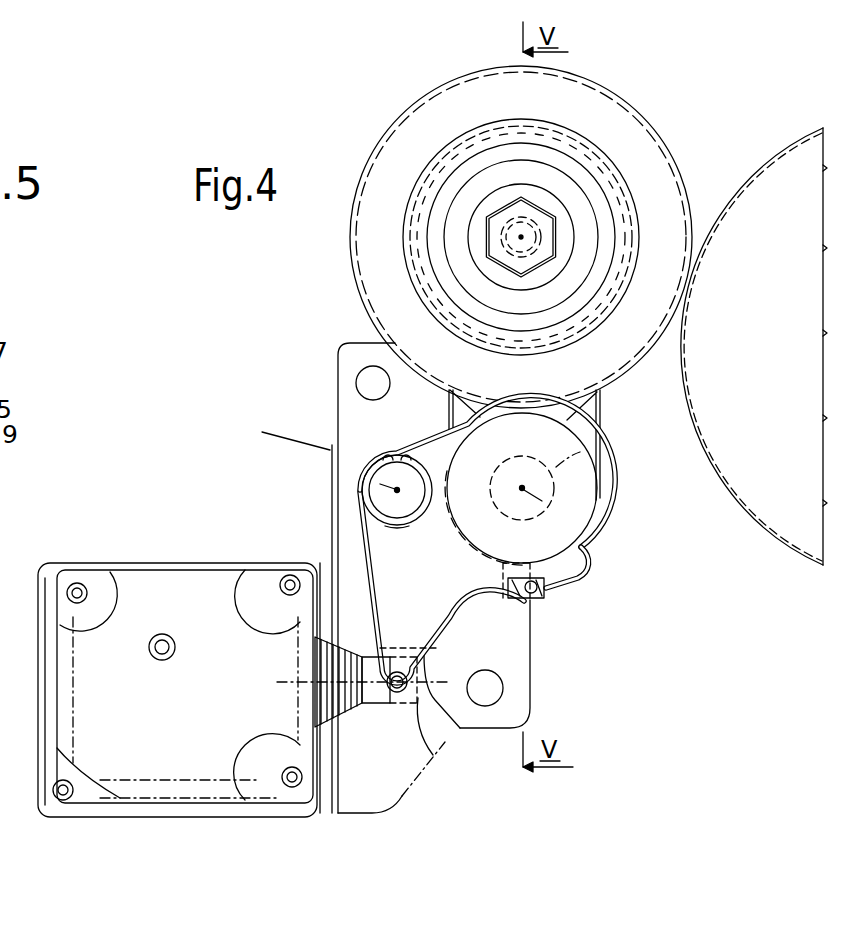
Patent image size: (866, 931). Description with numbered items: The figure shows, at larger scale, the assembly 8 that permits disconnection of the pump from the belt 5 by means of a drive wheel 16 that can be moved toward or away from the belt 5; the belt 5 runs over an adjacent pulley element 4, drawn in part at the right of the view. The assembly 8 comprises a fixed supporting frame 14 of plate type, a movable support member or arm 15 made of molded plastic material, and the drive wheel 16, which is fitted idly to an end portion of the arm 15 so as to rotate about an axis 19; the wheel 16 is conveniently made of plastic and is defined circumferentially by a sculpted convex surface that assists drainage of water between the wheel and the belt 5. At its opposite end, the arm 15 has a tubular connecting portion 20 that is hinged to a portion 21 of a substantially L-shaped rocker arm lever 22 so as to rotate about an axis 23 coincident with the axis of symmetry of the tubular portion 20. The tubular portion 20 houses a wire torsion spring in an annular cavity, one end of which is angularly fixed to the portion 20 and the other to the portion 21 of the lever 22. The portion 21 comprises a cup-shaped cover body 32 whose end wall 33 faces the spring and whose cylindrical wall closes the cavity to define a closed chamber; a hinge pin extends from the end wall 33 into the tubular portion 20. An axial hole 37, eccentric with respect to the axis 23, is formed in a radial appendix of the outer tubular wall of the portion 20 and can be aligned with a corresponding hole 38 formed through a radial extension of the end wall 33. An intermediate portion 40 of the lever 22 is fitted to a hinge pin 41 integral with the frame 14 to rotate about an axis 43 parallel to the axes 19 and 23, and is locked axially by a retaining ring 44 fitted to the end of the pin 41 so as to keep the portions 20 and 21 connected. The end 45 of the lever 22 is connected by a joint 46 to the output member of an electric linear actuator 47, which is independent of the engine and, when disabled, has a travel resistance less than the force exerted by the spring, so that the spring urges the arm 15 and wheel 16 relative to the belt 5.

The drum 4 is at (735, 473).
The belt 5 is at (740, 513).
The assembly 8 is at (263, 435).
The fixed supporting frame 14 is at (393, 737).
The movable support member or arm 15 is at (573, 411).
The drive wheel 16 is at (419, 138).
The axis 19 is at (524, 234).
The tubular connecting portion 20 is at (603, 490).
The portion of lever 21 is at (580, 452).
The rocker arm lever 22 is at (531, 655).
The axis 23 is at (545, 528).
The cup-shaped cover body 32 is at (578, 494).
The end wall 33 is at (583, 545).
The axial hole 37 is at (520, 612).
The hole 38 is at (532, 597).
The intermediate portion 40 is at (362, 504).
The hinge pin 41 is at (378, 484).
The axis 43 is at (370, 462).
The retaining ring 44 is at (393, 527).
The end of lever 45 is at (448, 738).
The joint 46 is at (437, 760).
The electric linear actuator 47 is at (203, 747).